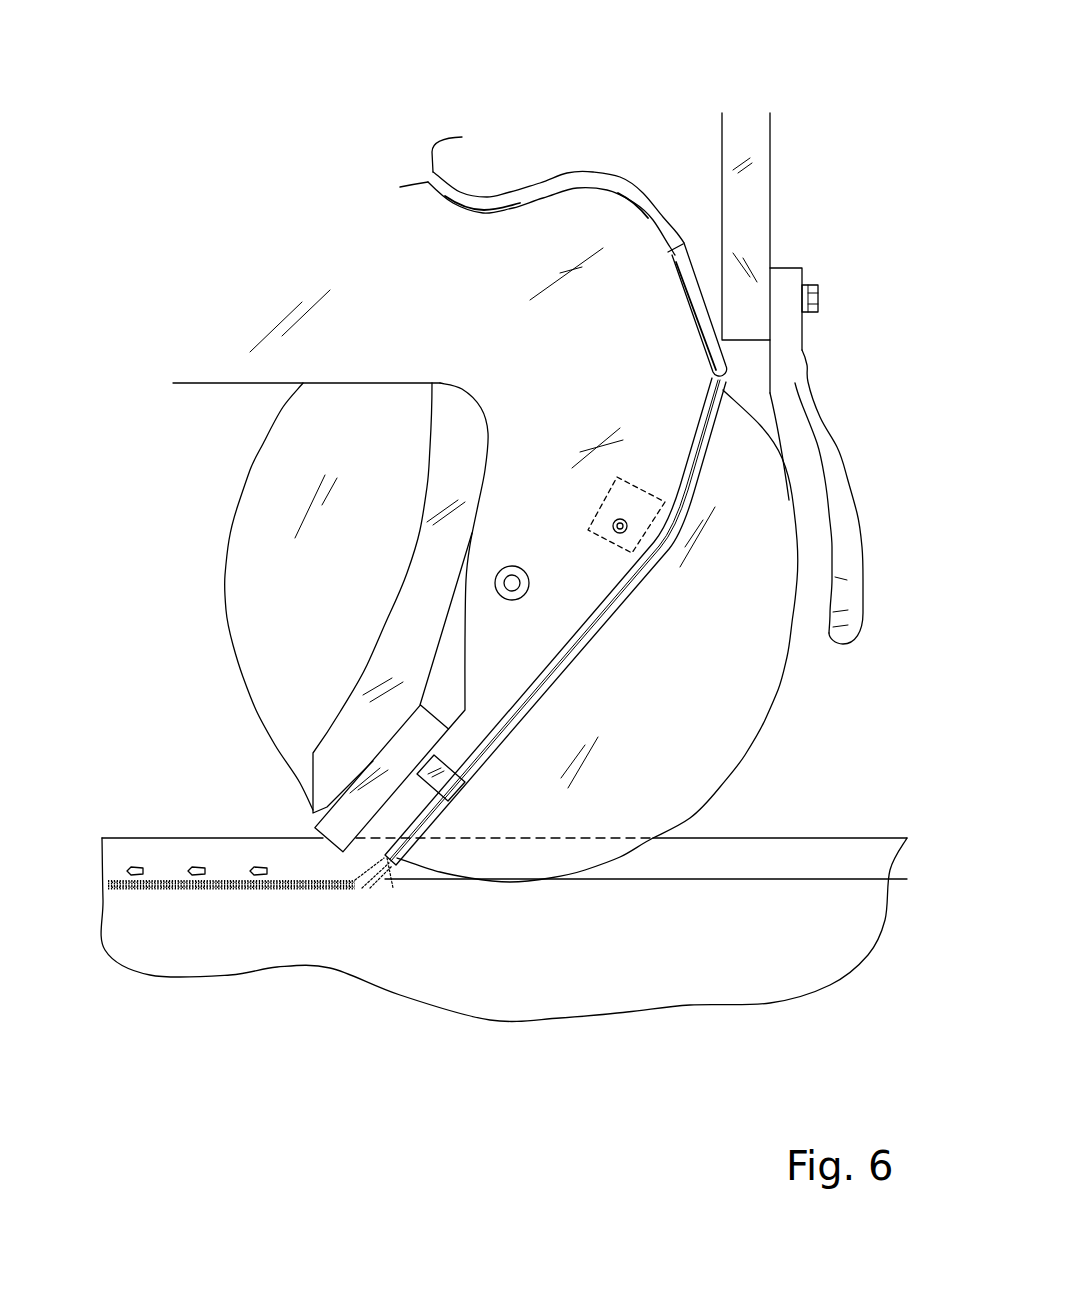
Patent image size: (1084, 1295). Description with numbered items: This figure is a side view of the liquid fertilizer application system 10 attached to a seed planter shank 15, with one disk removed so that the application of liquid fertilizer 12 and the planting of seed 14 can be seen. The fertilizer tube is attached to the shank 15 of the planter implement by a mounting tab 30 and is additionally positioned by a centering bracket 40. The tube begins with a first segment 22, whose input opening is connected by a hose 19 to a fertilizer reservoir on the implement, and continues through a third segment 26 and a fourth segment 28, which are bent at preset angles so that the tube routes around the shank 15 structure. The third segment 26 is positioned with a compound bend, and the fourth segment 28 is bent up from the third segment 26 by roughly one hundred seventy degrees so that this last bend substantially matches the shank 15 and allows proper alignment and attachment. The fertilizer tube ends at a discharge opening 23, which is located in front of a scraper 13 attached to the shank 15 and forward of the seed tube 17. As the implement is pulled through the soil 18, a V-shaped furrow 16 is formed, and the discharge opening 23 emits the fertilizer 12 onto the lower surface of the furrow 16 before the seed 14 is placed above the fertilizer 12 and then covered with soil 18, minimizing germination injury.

The liquid fertilizer application system 10 is at (321, 123).
The liquid fertilizer 12 is at (212, 885).
The scraper 13 is at (317, 828).
The seed 14 is at (127, 862).
The shank 15 is at (523, 510).
The furrow 16 is at (240, 853).
The seed tube 17 is at (340, 743).
The soil 18 is at (723, 982).
The hose 19 is at (571, 182).
The first segment 22 is at (692, 287).
The discharge opening 23 is at (397, 887).
The third segment 26 is at (690, 457).
The fourth segment 28 is at (585, 635).
The mounting tab 30 is at (638, 488).
The centering bracket 40 is at (472, 809).